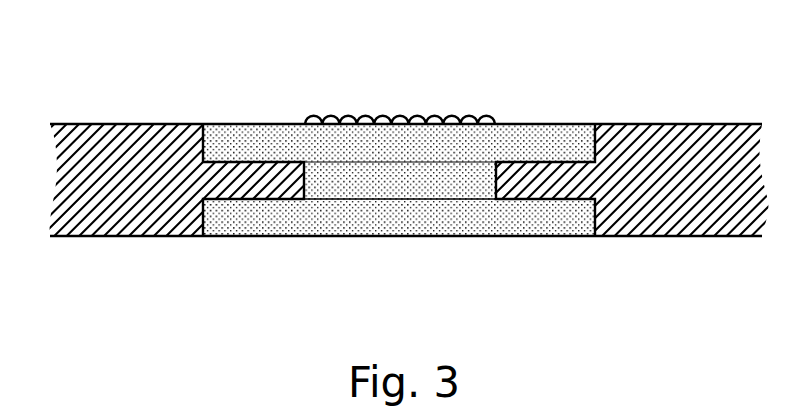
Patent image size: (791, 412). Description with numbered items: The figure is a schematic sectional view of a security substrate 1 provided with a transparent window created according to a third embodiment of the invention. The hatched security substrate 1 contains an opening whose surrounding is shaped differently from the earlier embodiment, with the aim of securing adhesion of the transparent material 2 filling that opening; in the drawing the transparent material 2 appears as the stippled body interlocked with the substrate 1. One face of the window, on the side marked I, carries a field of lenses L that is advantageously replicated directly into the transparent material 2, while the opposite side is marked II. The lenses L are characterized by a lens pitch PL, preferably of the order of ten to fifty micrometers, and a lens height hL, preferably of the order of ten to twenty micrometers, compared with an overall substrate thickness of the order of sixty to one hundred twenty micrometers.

The security substrate 1 is at (96, 220).
The transparent material 2 is at (493, 223).
The lenses L is at (391, 110).
The lens pitch PL is at (480, 86).
The lens height hL is at (518, 80).
The first side I is at (683, 94).
The second side II is at (687, 275).